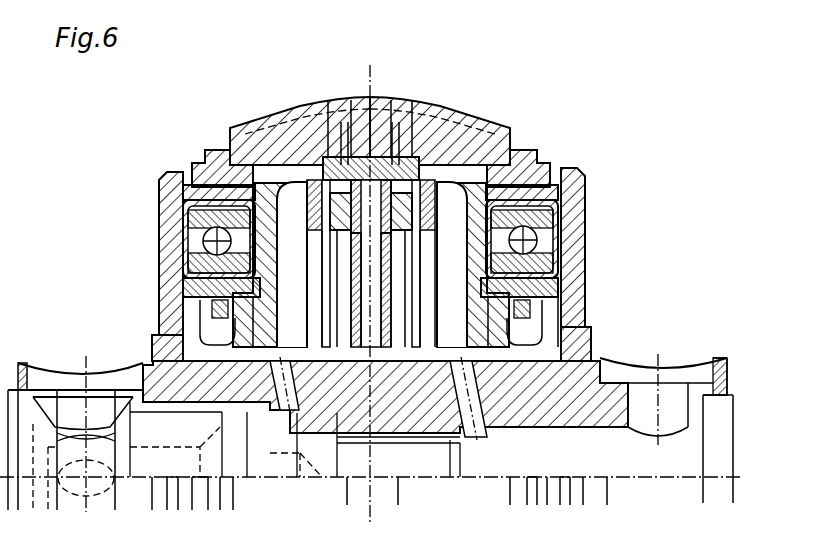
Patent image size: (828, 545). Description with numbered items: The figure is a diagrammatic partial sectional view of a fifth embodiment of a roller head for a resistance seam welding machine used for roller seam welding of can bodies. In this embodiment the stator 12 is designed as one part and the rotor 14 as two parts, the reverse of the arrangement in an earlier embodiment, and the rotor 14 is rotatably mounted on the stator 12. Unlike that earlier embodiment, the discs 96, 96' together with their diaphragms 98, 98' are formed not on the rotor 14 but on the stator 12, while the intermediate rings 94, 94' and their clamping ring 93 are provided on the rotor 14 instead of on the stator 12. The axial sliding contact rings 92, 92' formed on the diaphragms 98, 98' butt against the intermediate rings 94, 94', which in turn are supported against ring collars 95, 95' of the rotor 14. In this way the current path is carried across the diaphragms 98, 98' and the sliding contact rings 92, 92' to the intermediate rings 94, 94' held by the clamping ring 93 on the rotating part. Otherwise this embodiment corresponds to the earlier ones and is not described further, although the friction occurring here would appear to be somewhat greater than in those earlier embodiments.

The stator 12 is at (600, 358).
The rotor 14 is at (383, 96).
The axial sliding contact ring 92 is at (453, 116).
The axial sliding contact ring 92' is at (287, 118).
The clamping ring 93 is at (366, 150).
The intermediate ring 94 is at (424, 187).
The intermediate ring 94' is at (328, 187).
The ring collar 95 is at (473, 187).
The ring collar 95' is at (272, 187).
The disc 96 is at (418, 290).
The disc 96' is at (365, 290).
The diaphragm 98 is at (523, 255).
The diaphragm 98' is at (220, 255).